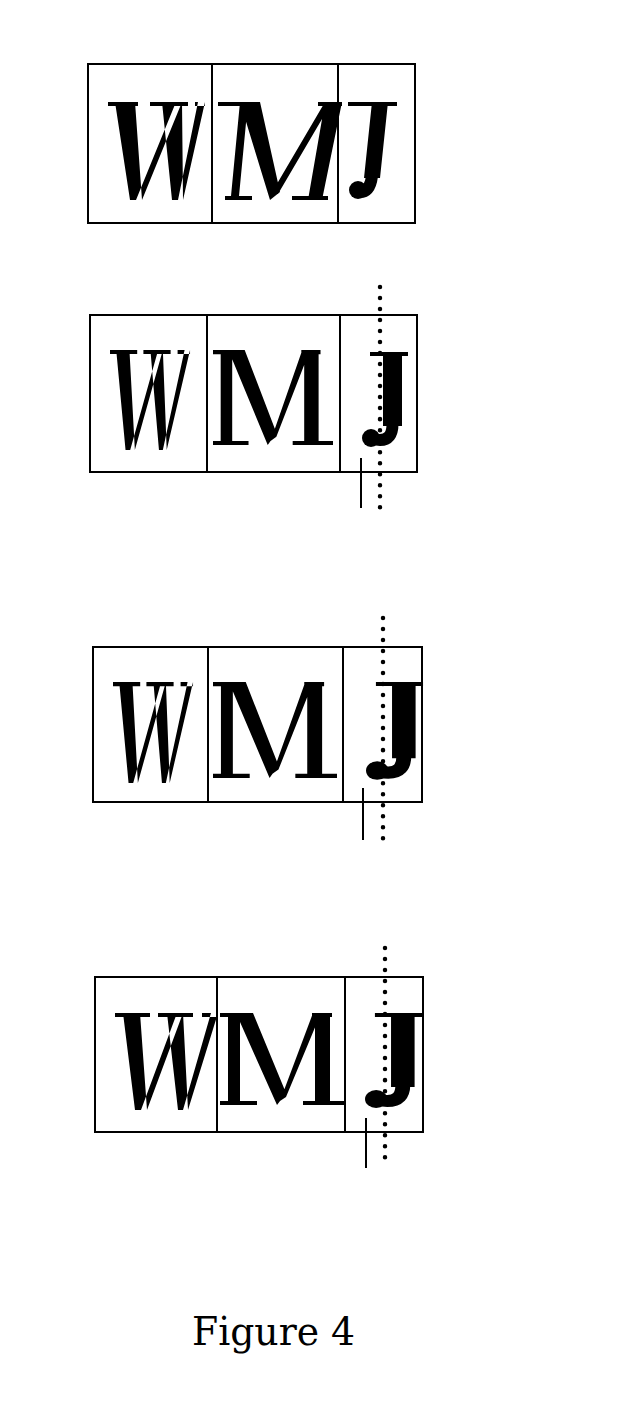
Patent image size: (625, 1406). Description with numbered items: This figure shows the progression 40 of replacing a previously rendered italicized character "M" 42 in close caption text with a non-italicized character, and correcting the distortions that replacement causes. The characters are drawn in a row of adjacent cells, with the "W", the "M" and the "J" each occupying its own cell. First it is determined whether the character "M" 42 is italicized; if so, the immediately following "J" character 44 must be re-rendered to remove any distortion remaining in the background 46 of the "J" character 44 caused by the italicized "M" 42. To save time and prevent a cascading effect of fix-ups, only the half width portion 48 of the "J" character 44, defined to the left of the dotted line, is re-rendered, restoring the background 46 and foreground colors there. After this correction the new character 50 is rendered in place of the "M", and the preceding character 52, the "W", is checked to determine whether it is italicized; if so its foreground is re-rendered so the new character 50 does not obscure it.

The progression 40 is at (104, 55).
The character "M" 42 is at (278, 80).
The "J" character 44 is at (395, 93).
The background 46 is at (353, 80).
The ½ the width portion 48 is at (360, 828).
The new character 50 is at (260, 348).
The preceding character 52 is at (127, 348).